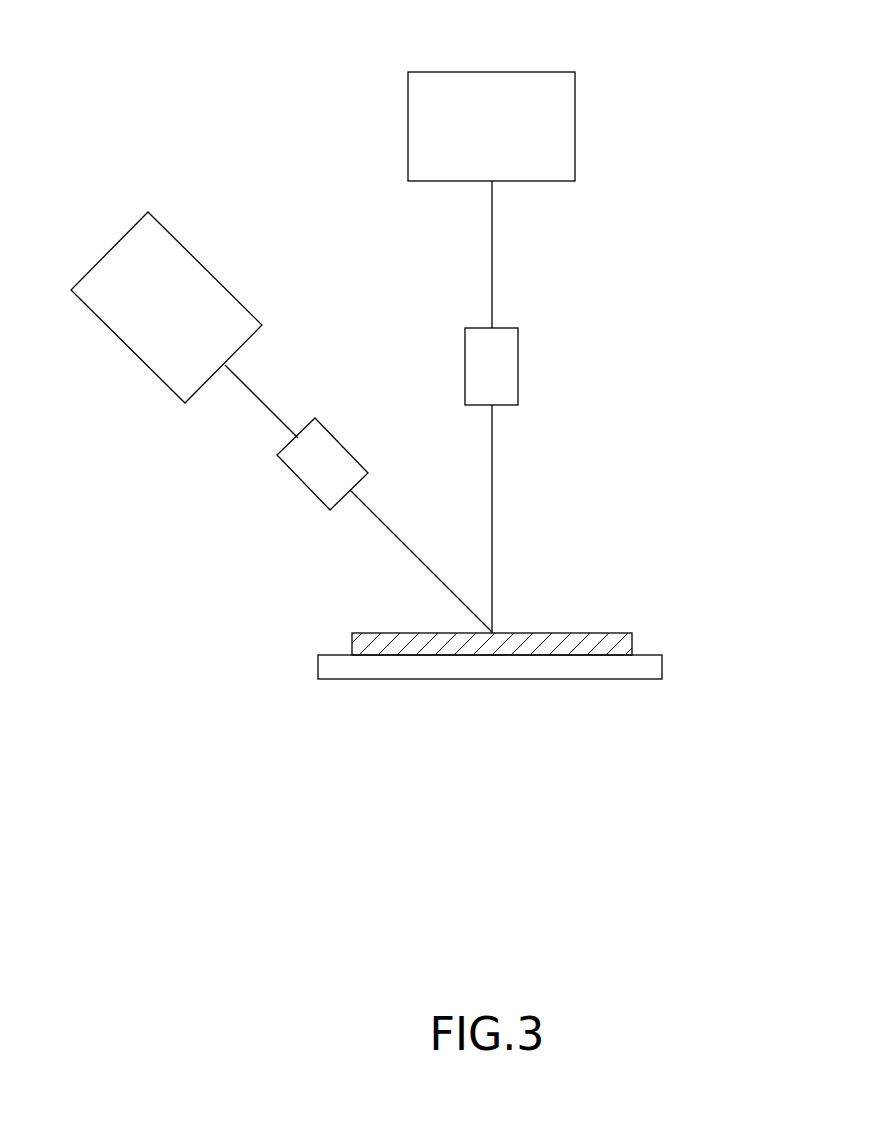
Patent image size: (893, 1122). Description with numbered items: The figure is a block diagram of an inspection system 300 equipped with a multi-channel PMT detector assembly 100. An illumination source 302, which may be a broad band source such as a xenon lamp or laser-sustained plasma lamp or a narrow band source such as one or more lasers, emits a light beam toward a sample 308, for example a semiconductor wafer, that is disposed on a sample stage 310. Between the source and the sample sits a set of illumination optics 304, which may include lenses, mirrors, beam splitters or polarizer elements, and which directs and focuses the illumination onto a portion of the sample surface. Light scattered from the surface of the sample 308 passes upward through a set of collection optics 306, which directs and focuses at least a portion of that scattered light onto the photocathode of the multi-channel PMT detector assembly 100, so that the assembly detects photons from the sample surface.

The inspection system 300 is at (181, 73).
The multi-channel PMT detector assembly 100 is at (467, 137).
The illumination source 302 is at (142, 319).
The set of illumination optics 304 is at (302, 484).
The set of collection optics 306 is at (466, 362).
The sample 308 is at (632, 640).
The sample stage 310 is at (662, 668).